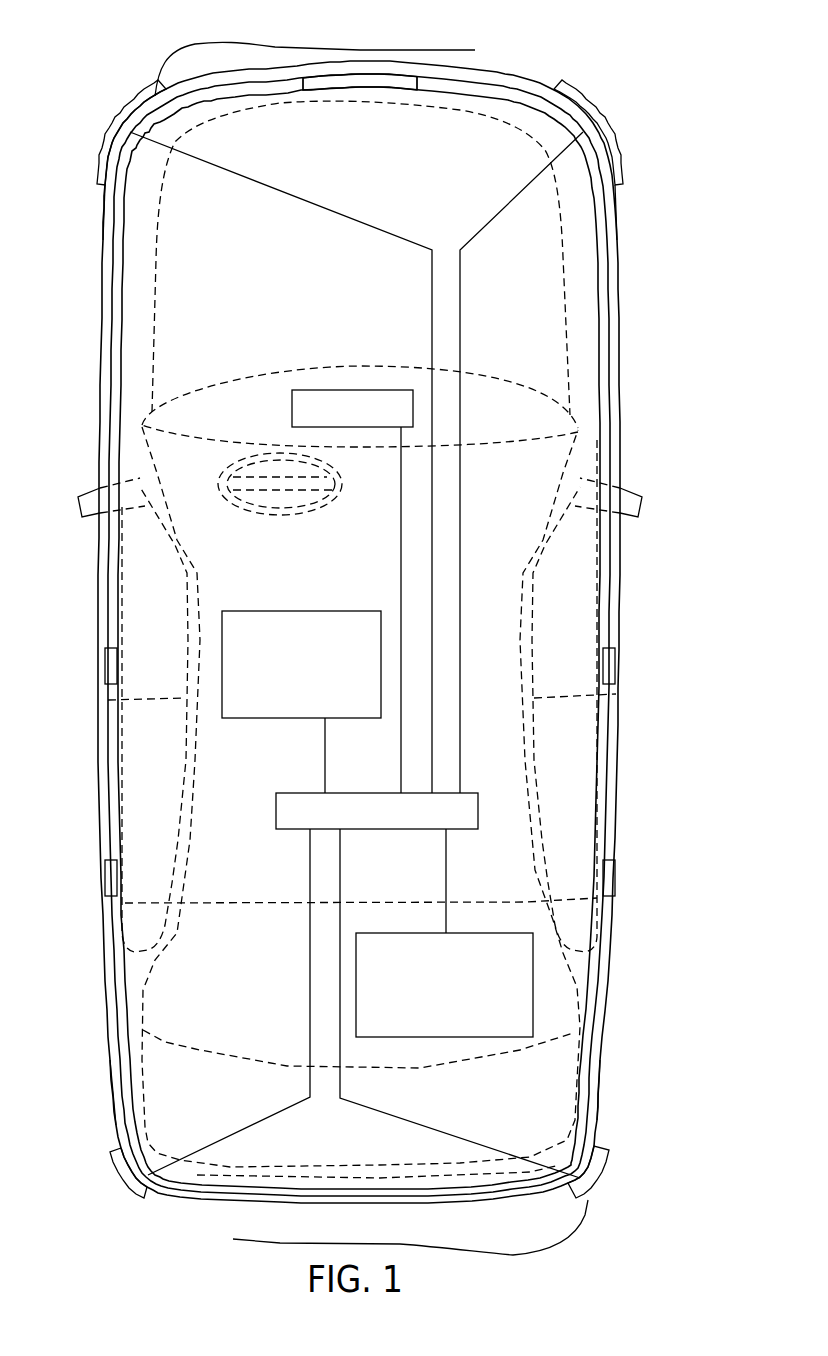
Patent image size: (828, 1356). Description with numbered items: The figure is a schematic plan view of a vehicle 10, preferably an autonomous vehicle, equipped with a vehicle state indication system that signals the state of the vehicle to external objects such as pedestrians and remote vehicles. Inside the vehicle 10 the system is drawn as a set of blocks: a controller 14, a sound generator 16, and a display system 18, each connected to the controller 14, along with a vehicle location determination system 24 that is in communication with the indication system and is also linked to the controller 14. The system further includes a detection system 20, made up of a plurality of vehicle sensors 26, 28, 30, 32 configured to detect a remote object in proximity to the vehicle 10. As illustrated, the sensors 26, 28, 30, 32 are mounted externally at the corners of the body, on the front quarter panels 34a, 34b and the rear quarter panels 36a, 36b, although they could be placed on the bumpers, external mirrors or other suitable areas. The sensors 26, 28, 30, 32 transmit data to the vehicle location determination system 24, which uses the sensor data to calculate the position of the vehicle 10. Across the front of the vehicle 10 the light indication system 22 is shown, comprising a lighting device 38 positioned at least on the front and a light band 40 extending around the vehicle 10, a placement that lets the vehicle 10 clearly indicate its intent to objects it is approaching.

The vehicle 10 is at (655, 260).
The controller 14 is at (291, 829).
The sound generator 16 is at (278, 611).
The display system 18 is at (292, 410).
The detection system 20 is at (472, 45).
The light indication system 22 is at (265, 152).
The vehicle location determination system 24 is at (533, 973).
The vehicle sensor 26 is at (329, 68).
The vehicle sensor 28 is at (567, 97).
The vehicle sensor 30 is at (134, 1203).
The vehicle sensor 32 is at (395, 1227).
The front quarter panel 34a is at (103, 201).
The front quarter panel 34b is at (617, 204).
The rear quarter panel 36a is at (112, 1137).
The rear quarter panel 36b is at (603, 1127).
The lighting device 38 is at (365, 91).
The light band 40 is at (277, 92).